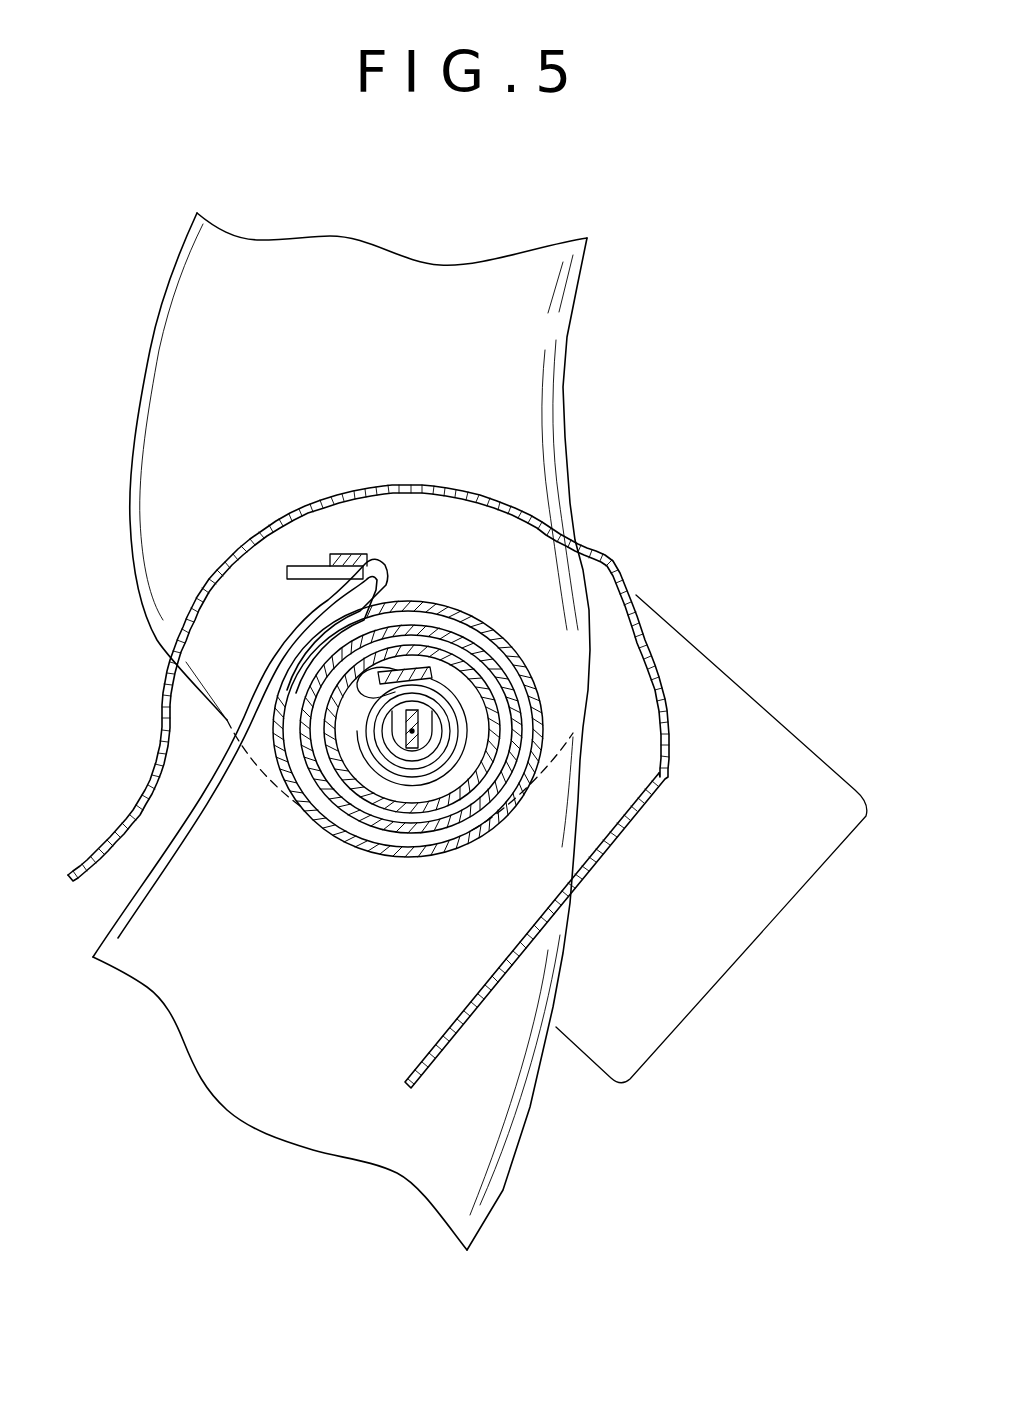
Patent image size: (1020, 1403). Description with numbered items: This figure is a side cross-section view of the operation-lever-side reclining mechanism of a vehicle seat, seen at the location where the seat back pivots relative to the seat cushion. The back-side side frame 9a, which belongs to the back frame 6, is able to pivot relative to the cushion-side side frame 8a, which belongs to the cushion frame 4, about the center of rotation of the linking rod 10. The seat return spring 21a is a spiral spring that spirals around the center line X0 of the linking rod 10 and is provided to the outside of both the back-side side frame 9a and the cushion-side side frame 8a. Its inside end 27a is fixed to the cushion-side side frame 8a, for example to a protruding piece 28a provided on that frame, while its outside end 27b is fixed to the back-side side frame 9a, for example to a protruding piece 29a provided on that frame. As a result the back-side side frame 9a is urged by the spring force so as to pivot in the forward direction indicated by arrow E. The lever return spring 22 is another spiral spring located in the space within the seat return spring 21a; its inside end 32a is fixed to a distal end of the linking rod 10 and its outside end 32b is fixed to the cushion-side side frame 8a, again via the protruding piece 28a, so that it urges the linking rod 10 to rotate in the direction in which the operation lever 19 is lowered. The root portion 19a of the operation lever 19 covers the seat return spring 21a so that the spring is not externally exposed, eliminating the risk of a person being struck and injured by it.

The back-side side frame 9a is at (418, 731).
The back frame 6 is at (532, 328).
The cushion-side side frame 8a is at (280, 904).
The cushion frame 4 is at (330, 1118).
The operation lever 19 is at (128, 812).
The root portion 19a is at (757, 955).
The seat return spring 21a is at (517, 667).
The lever return spring 22 is at (457, 760).
The inside end 27a is at (377, 667).
The outside end 27b is at (364, 557).
The protruding piece 28a is at (410, 667).
The protruding piece 29a is at (305, 572).
The inside end 32a is at (418, 760).
The outside end 32b is at (305, 800).
The linking rod 10 is at (410, 742).
The center line X0 is at (410, 748).
The arrow E is at (117, 310).